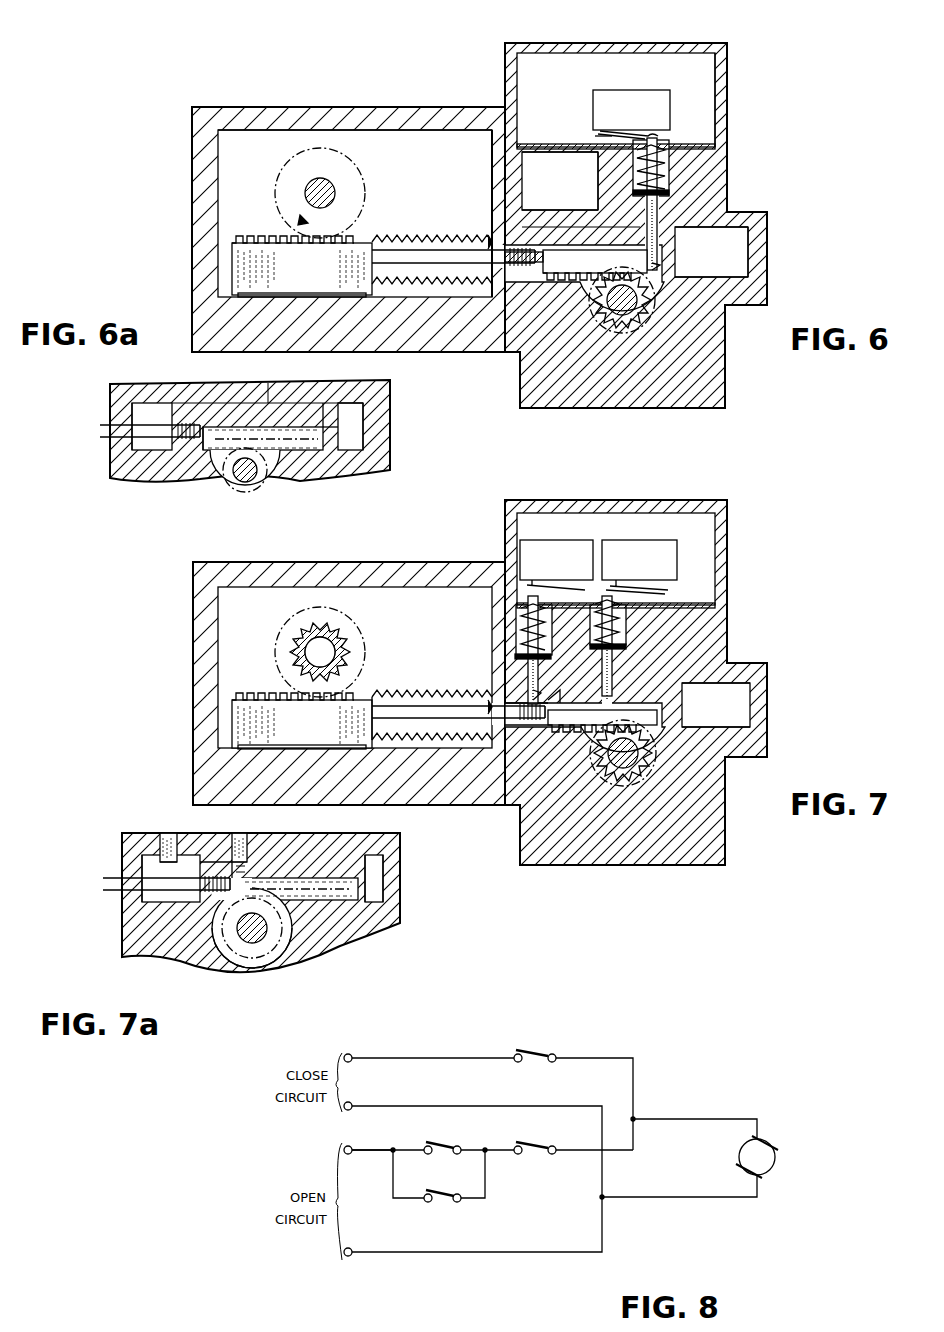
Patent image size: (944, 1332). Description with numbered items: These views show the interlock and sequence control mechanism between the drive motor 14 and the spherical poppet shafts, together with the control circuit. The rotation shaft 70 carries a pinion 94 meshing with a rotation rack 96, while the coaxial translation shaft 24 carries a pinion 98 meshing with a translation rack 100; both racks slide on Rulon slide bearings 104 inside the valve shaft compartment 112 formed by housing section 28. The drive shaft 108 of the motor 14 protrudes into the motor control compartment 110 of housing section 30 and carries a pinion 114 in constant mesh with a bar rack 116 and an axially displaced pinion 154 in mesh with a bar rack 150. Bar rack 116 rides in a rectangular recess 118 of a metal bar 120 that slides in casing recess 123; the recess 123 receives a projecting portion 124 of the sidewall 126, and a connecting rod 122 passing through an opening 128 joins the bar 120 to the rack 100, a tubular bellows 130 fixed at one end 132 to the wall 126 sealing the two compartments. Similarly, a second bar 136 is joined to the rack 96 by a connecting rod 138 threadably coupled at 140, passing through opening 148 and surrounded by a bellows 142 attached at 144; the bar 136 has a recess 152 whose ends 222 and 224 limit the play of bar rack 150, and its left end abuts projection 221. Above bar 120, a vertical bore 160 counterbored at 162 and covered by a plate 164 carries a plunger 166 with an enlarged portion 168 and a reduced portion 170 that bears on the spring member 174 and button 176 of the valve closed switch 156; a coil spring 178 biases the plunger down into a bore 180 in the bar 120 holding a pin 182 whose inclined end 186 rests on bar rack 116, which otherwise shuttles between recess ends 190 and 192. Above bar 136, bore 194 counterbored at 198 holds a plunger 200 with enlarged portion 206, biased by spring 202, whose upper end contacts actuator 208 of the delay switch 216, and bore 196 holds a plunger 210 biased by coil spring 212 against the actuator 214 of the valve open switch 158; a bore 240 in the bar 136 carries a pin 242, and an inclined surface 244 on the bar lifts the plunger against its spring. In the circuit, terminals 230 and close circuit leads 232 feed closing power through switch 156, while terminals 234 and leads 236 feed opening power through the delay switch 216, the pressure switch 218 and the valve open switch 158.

In FIG. 8, the drive motor 14 is at (769, 1172).
In FIG. 6, the translation shaft 24 is at (330, 185).
In FIG. 7, the translation shaft 24 is at (330, 640).
In FIG. 6, the housing section 28 is at (245, 107).
In FIG. 6, the housing section 30 is at (612, 43).
In FIG. 6a, the housing section 30 is at (175, 385).
In FIG. 7, the housing section 30 is at (604, 500).
In FIG. 7a, the housing section 30 is at (328, 942).
In FIG. 7, the rotation shaft 70 is at (342, 648).
In FIG. 7, the pinion 94 is at (352, 665).
In FIG. 7, the rotation rack 96 is at (262, 700).
In FIG. 6, the pinion 98 is at (355, 195).
In FIG. 6, the translation rack 100 is at (268, 248).
In FIG. 6, the slide bearings 104 is at (327, 295).
In FIG. 7, the slide bearings 104 is at (327, 748).
In FIG. 6, the drive shaft 108 is at (632, 310).
In FIG. 6a, the drive shaft 108 is at (243, 482).
In FIG. 7, the drive shaft 108 is at (630, 760).
In FIG. 7a, the drive shaft 108 is at (256, 944).
In FIG. 6, the motor control compartment 110 is at (655, 280).
In FIG. 6, the valve shaft compartment 112 is at (422, 156).
In FIG. 6, the pinion 114 is at (642, 302).
In FIG. 6a, the pinion 114 is at (232, 468).
In FIG. 6, the bar rack 116 is at (558, 278).
In FIG. 6a, the bar rack 116 is at (287, 455).
In FIG. 6, the rectangular recess 118 is at (578, 250).
In FIG. 6, the metal bar 120 is at (548, 232).
In FIG. 6a, the metal bar 120 is at (345, 400).
In FIG. 6, the connecting rod 122 is at (418, 252).
In FIG. 6a, the connecting rod 122 is at (108, 440).
In FIG. 6, the casing recess 123 is at (566, 215).
In FIG. 7, the casing recess 123 is at (618, 692).
In FIG. 6, the projecting portion 124 is at (533, 215).
In FIG. 6a, the projecting portion 124 is at (130, 410).
In FIG. 6, the sidewall 126 is at (496, 170).
In FIG. 6, the opening 128 is at (498, 340).
In FIG. 6, the tubular metal bellows 130 is at (392, 234).
In FIG. 6, the bellows end 132 is at (490, 240).
In FIG. 7, the second bar 136 is at (690, 680).
In FIG. 7a, the second bar 136 is at (318, 860).
In FIG. 7, the connecting rod 138 is at (415, 708).
In FIG. 7a, the connecting rod 138 is at (150, 908).
In FIG. 7, the threaded coupling 140 is at (542, 760).
In FIG. 7, the tubular metal bellows 142 is at (370, 735).
In FIG. 7, the bellows attachment 144 is at (482, 692).
In FIG. 7, the opening 148 is at (520, 790).
In FIG. 7, the bar rack 150 is at (656, 718).
In FIG. 7a, the bar rack 150 is at (380, 872).
In FIG. 7, the recess 152 is at (668, 697).
In FIG. 7, the pinion 154 is at (640, 755).
In FIG. 6, the valve closed switch 156 is at (646, 92).
In FIG. 8, the valve closed switch 156 is at (543, 1048).
In FIG. 7, the valve open switch 158 is at (668, 545).
In FIG. 8, the valve open switch 158 is at (538, 1142).
In FIG. 6, the vertical bore 160 is at (660, 195).
In FIG. 6a, the vertical bore 160 is at (272, 390).
In FIG. 6, the counterbore 162 is at (700, 160).
In FIG. 6, the cover plate 164 is at (520, 143).
In FIG. 7, the cover plate 164 is at (660, 603).
In FIG. 6, the plunger 166 is at (665, 212).
In FIG. 6a, the plunger 166 is at (276, 392).
In FIG. 6, the enlarged diameter portion 168 is at (652, 180).
In FIG. 6, the reduced diameter portion 170 is at (660, 140).
In FIG. 6, the spring member 174 is at (645, 138).
In FIG. 6, the button 176 is at (618, 131).
In FIG. 6, the coil spring 178 is at (633, 160).
In FIG. 6, the bore 180 is at (668, 240).
In FIG. 6a, the bore 180 is at (320, 410).
In FIG. 6, the pin 182 is at (690, 215).
In FIG. 6a, the pin 182 is at (354, 415).
In FIG. 6, the inclined lower end 186 is at (668, 258).
In FIG. 6a, the inclined lower end 186 is at (354, 438).
In FIG. 6, the recess end 190 is at (545, 262).
In FIG. 6a, the recess end 190 is at (183, 470).
In FIG. 6, the recess end 192 is at (668, 268).
In FIG. 6a, the recess end 192 is at (322, 440).
In FIG. 7, the vertical bore 194 is at (520, 652).
In FIG. 7, the vertical bore 196 is at (616, 664).
In FIG. 7, the counterbore 198 is at (524, 612).
In FIG. 7, the plunger 200 is at (522, 640).
In FIG. 7a, the plunger 200 is at (162, 833).
In FIG. 7, the spring 202 is at (498, 572).
In FIG. 7, the enlarged diameter portion 206 is at (525, 620).
In FIG. 7, the actuator 208 is at (540, 584).
In FIG. 7, the plunger 210 is at (614, 652).
In FIG. 7a, the plunger 210 is at (244, 850).
In FIG. 7, the coil spring 212 is at (626, 590).
In FIG. 7, the actuator 214 is at (612, 585).
In FIG. 7, the delay switch 216 is at (540, 545).
In FIG. 8, the delay switch 216 is at (440, 1142).
In FIG. 8, the pressure switch 218 is at (450, 1210).
In FIG. 7, the projection 221 is at (492, 706).
In FIG. 7a, the projection 221 is at (130, 862).
In FIG. 7, the recess end 222 is at (565, 712).
In FIG. 7a, the recess end 222 is at (212, 940).
In FIG. 7, the recess end 224 is at (672, 735).
In FIG. 7a, the recess end 224 is at (352, 900).
In FIG. 8, the terminals 230 is at (350, 1065).
In FIG. 8, the close circuit lines 232 is at (416, 1062).
In FIG. 8, the terminals 234 is at (360, 1148).
In FIG. 8, the open circuit lines 236 is at (365, 1155).
In FIG. 7, the bore 240 is at (562, 702).
In FIG. 7a, the bore 240 is at (256, 876).
In FIG. 7, the pin 242 is at (542, 672).
In FIG. 7a, the pin 242 is at (200, 850).
In FIG. 7, the inclined surface 244 is at (522, 664).
In FIG. 7a, the inclined surface 244 is at (222, 858).